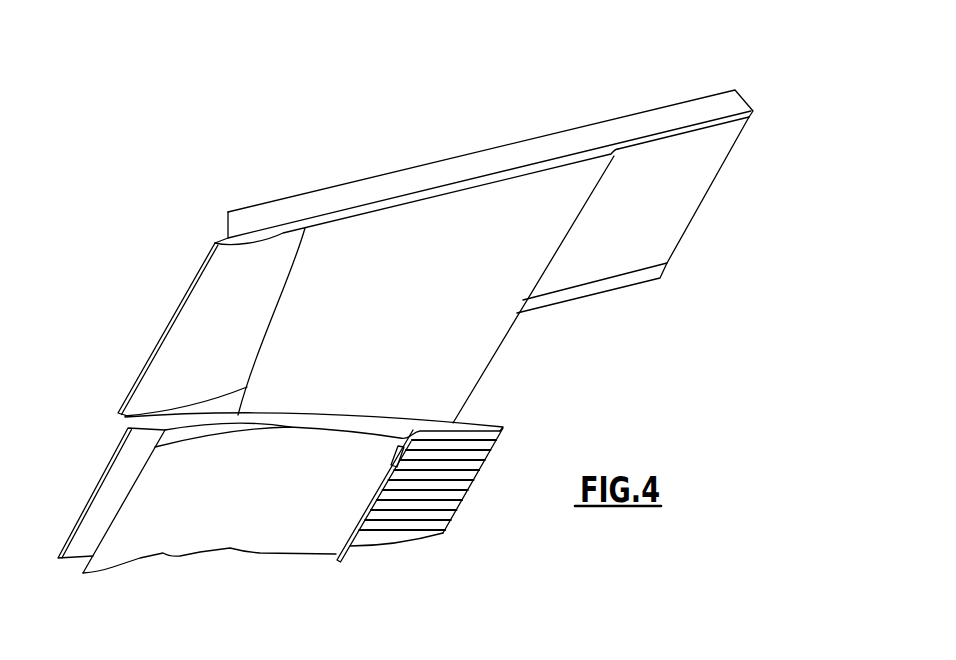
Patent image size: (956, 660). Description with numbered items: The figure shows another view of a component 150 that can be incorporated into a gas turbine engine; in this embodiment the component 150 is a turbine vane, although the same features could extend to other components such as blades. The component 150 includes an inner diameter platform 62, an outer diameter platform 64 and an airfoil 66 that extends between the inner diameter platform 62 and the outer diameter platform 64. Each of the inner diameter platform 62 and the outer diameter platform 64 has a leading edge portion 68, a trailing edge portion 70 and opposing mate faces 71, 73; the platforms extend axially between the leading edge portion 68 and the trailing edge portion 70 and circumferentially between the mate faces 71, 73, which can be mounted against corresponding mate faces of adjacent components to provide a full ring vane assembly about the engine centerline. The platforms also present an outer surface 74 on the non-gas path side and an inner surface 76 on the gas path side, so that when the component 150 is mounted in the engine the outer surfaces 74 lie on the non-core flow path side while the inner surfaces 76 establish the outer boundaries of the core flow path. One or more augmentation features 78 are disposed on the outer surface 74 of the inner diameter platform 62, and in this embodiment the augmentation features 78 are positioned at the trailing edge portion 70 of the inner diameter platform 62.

The component 150 is at (760, 254).
The inner diameter platform 62 is at (162, 553).
The outer diameter platform 64 is at (692, 112).
The airfoil 66 is at (358, 313).
The leading edge portion 68 is at (188, 229).
The trailing edge portion 70 is at (662, 290).
The mate face 71 is at (437, 190).
The mate face 73 is at (127, 416).
The outer surface 74 is at (598, 120).
The inner surface 76 is at (380, 413).
The augmentation features 78 is at (450, 492).